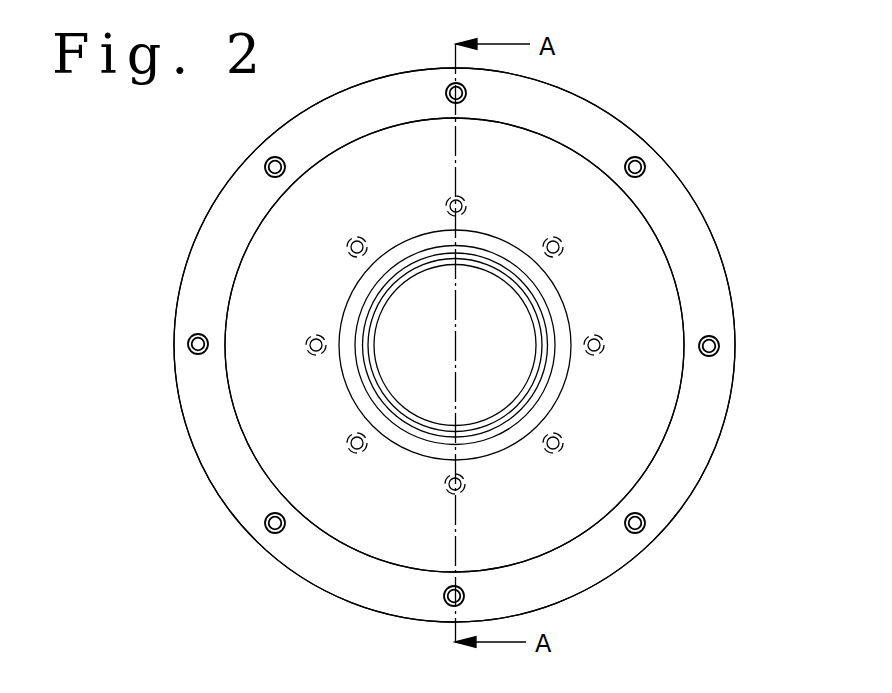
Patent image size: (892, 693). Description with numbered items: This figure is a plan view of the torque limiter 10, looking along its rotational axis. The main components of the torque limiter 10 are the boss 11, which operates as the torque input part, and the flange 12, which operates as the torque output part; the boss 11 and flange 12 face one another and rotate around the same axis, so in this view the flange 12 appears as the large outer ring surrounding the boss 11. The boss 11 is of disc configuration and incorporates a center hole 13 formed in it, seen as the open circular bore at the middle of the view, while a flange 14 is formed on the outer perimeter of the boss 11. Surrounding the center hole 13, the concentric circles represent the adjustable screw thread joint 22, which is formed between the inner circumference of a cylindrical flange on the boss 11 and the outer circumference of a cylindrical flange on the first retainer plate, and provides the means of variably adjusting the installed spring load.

The torque limiter 10 is at (672, 138).
The boss 11 is at (670, 318).
The flange 12 is at (712, 243).
The center hole 13 is at (441, 390).
The flange 14 is at (677, 412).
The adjustable screw thread joint 22 is at (377, 308).